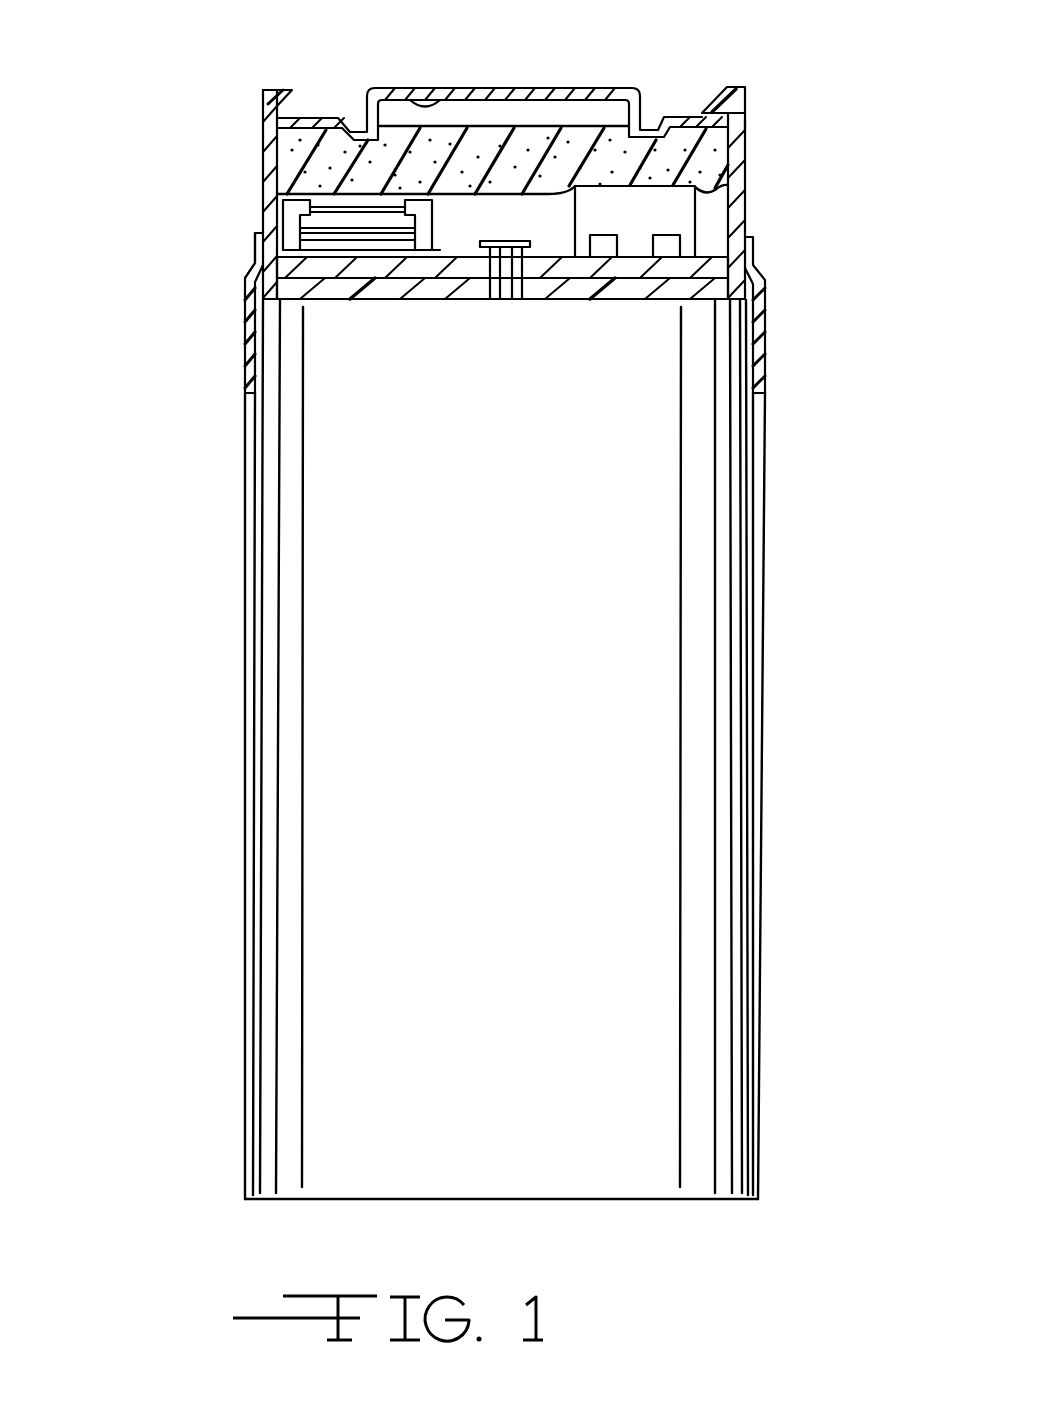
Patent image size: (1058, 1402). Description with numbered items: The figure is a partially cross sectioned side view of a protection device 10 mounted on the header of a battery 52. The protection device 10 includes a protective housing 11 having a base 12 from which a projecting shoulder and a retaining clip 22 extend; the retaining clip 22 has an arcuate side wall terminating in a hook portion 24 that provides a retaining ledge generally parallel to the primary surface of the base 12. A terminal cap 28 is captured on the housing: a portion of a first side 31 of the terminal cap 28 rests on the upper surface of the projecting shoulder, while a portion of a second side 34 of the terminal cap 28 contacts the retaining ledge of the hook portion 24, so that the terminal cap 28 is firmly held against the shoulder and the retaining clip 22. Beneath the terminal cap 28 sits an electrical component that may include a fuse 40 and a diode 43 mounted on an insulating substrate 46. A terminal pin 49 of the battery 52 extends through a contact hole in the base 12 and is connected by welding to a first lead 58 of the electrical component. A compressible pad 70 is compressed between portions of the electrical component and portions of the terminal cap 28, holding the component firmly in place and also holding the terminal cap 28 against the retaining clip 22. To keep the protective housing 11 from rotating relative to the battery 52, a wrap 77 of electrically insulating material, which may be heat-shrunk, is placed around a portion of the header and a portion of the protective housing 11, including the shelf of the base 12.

The protection device 10 is at (208, 279).
The protective housing 11 is at (782, 136).
The base 12 is at (390, 290).
The retaining clip 22 is at (273, 112).
The hook portion 24 is at (290, 110).
The terminal cap 28 is at (593, 90).
The first side 31 is at (446, 88).
The second side 34 is at (506, 88).
The fuse 40 is at (343, 217).
The diode 43 is at (650, 223).
The insulating substrate 46 is at (567, 265).
The terminal pin 49 is at (505, 290).
The battery 52 is at (507, 688).
The first lead 58 is at (453, 247).
The compressible pad 70 is at (717, 148).
The wrap 77 is at (243, 346).